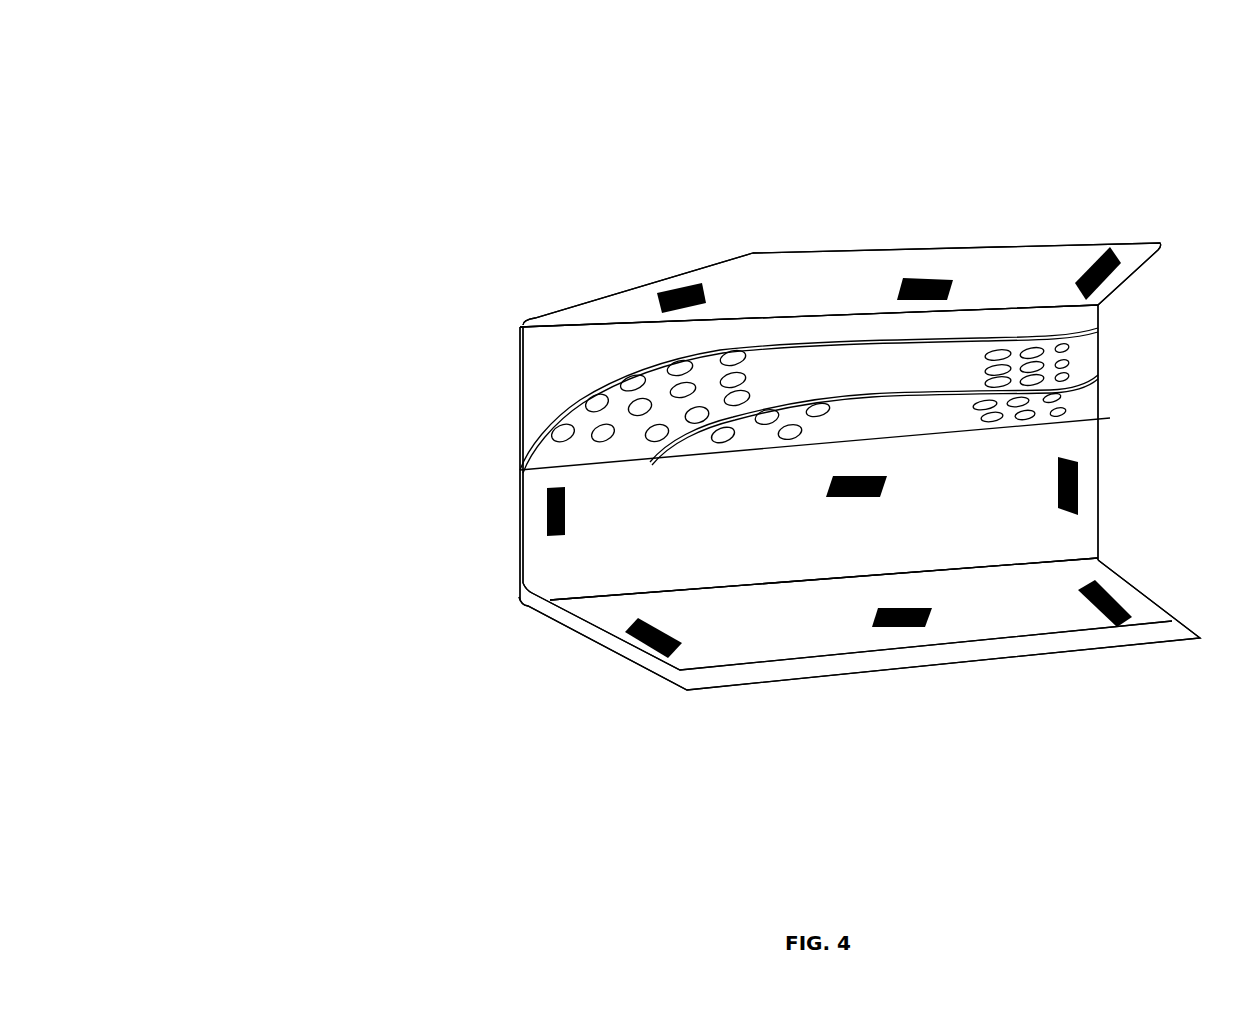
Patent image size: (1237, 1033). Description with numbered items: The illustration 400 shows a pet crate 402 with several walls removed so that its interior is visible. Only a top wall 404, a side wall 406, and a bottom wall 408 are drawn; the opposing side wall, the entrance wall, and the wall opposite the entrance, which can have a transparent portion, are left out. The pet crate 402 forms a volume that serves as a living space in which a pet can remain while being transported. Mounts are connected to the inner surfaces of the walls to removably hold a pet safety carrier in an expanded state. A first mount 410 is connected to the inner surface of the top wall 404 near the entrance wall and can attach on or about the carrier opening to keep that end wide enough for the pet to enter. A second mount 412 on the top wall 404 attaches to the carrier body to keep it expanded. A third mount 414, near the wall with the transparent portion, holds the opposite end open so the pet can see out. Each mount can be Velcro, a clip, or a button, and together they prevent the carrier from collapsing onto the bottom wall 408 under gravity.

The illustration 400 is at (290, 91).
The pet crate 402 is at (613, 295).
The top wall 404 is at (1011, 262).
The side wall 406 is at (575, 560).
The bottom wall 408 is at (757, 668).
The first mount 410 is at (677, 290).
The second mount 412 is at (928, 280).
The third mount 414 is at (1103, 300).